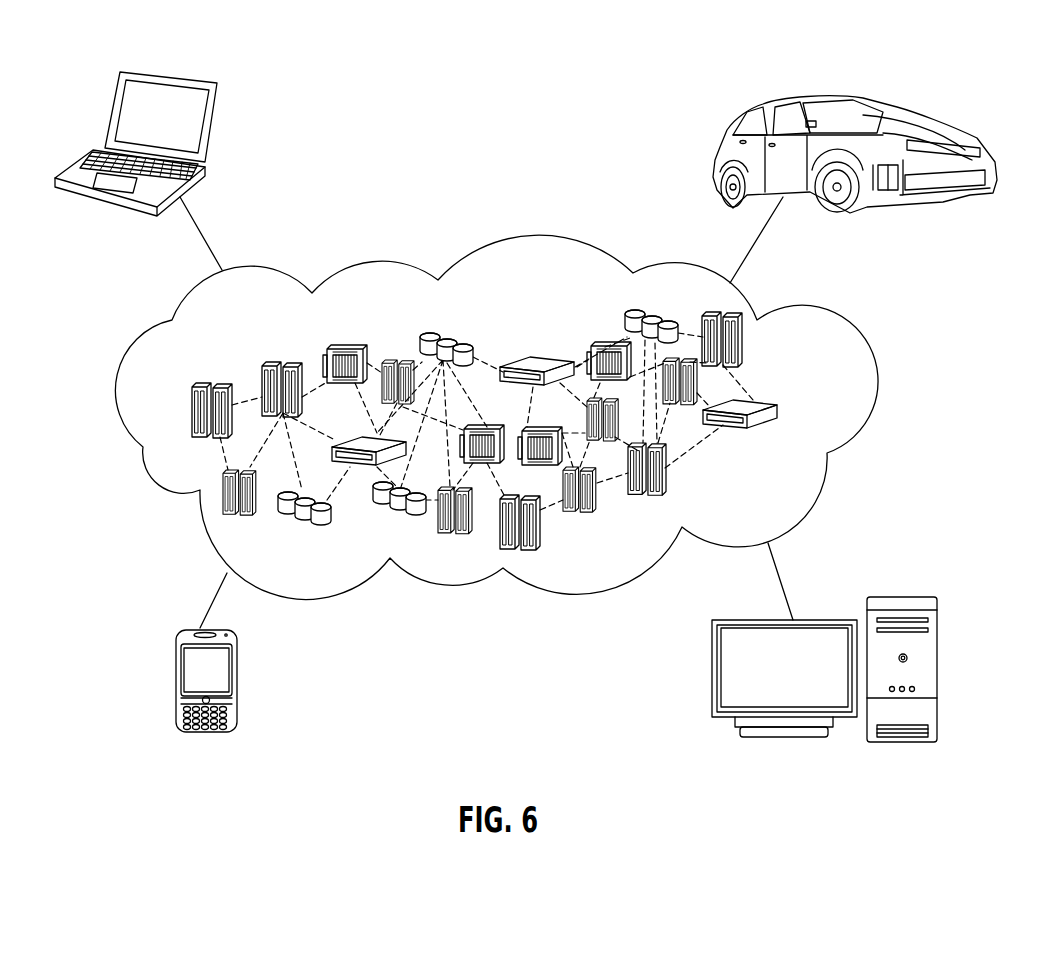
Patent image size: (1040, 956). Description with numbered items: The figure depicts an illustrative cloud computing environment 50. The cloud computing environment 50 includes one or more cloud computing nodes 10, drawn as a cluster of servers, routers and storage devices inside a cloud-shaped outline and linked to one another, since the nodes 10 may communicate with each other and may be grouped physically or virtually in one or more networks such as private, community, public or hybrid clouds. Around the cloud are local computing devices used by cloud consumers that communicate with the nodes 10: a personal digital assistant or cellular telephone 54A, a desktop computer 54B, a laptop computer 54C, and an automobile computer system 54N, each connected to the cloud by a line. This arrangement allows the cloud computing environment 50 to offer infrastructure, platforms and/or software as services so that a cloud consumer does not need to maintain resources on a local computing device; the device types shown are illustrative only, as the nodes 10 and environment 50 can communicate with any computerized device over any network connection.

The cloud computing node 10 is at (813, 412).
The cloud computing environment 50 is at (833, 335).
The cellular telephone 54A is at (178, 683).
The desktop computer 54B is at (907, 597).
The laptop computer 54C is at (210, 130).
The automobile computer system 54N is at (728, 135).